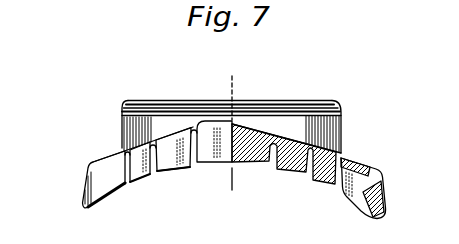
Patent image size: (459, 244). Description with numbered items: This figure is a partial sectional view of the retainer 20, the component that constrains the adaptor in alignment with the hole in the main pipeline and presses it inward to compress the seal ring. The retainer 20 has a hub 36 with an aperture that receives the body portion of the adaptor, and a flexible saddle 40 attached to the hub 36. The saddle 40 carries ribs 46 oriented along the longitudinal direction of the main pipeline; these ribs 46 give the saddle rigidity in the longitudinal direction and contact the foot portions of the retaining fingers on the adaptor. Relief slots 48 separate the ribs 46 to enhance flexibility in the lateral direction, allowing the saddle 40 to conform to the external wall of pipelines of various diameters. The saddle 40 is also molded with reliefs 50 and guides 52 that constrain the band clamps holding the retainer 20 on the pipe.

The retainer 20 is at (97, 153).
The hub 36 is at (122, 118).
The flexible saddle 40 is at (86, 184).
The ribs 46 is at (125, 184).
The relief slots 48 is at (193, 130).
The reliefs 50 is at (322, 150).
The guides 52 is at (366, 158).